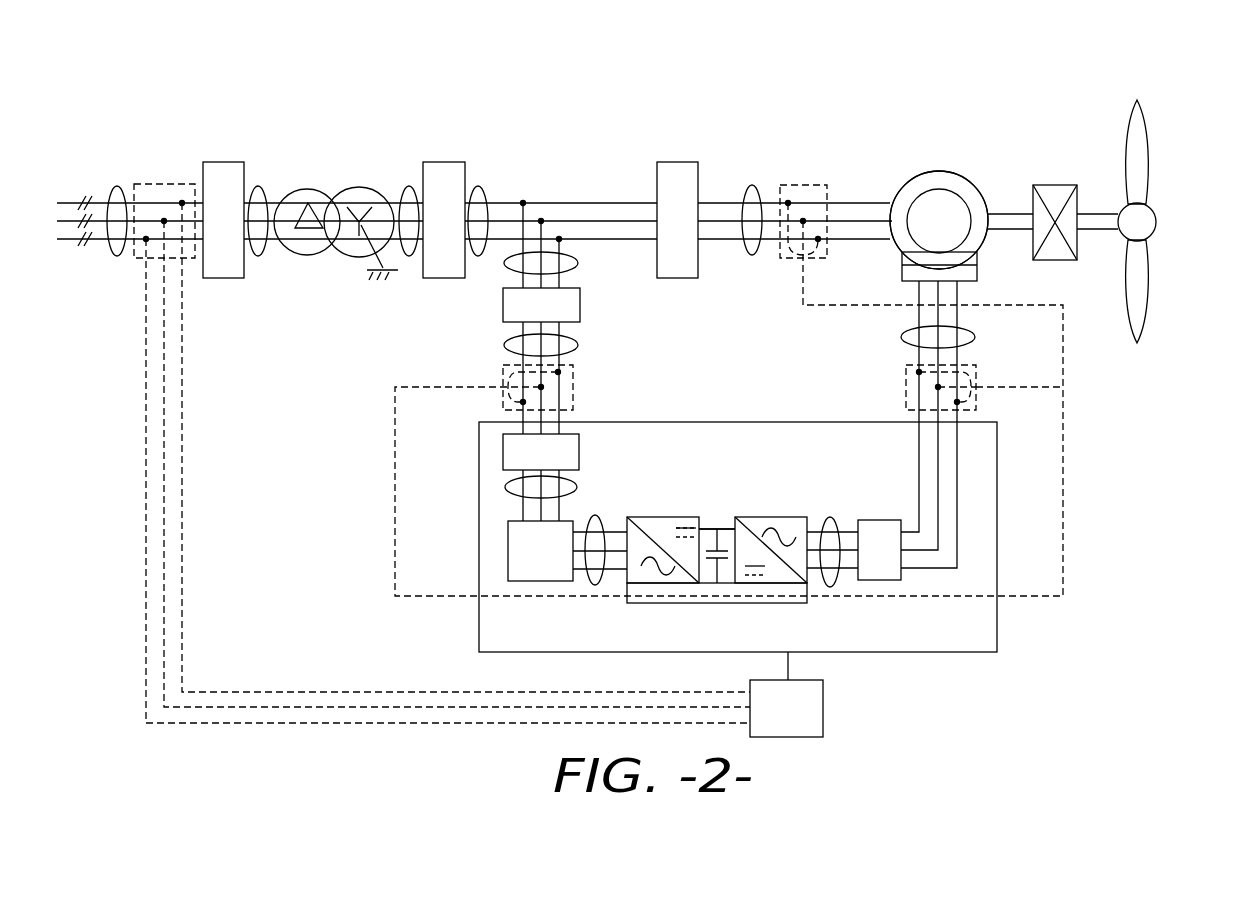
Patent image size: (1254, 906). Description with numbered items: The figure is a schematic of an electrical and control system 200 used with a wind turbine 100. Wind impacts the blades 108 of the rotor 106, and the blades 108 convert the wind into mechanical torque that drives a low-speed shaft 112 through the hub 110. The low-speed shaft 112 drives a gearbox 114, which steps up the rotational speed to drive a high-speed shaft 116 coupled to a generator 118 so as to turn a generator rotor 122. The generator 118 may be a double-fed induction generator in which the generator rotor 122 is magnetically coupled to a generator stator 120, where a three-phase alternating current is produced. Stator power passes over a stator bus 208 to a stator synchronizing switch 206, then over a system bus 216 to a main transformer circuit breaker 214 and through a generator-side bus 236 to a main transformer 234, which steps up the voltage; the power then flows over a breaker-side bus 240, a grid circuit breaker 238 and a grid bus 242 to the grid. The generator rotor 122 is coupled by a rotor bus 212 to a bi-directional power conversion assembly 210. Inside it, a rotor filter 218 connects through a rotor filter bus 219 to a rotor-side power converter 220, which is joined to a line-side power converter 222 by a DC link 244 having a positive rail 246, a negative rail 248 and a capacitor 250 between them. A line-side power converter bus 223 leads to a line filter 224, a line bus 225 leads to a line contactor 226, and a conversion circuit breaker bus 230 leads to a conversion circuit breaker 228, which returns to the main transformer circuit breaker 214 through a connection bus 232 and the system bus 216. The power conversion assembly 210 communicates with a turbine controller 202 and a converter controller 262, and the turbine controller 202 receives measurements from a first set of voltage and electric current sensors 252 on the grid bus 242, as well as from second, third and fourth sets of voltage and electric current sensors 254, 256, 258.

The wind turbine 100 is at (1108, 85).
The rotor 106 is at (1158, 182).
The blades 108 is at (1148, 148).
The hub 110 is at (1158, 225).
The low-speed shaft 112 is at (1085, 213).
The gearbox 114 is at (1055, 185).
The high-speed shaft 116 is at (1000, 213).
The generator 118 is at (918, 140).
The generator stator 120 is at (940, 172).
The generator rotor 122 is at (920, 197).
The electrical and control system 200 is at (170, 97).
The turbine controller 202 is at (765, 724).
The stator synchronizing switch 206 is at (672, 162).
The stator bus 208 is at (752, 185).
The power conversion assembly 210 is at (997, 497).
The rotor bus 212 is at (975, 337).
The main transformer circuit breaker 214 is at (445, 162).
The system bus 216 is at (478, 186).
The rotor filter 218 is at (875, 520).
The rotor filter bus 219 is at (830, 517).
The rotor-side power converter 220 is at (812, 580).
The line-side power converter 222 is at (627, 578).
The line-side power converter bus 223 is at (597, 515).
The line filter 224 is at (508, 548).
The line bus 225 is at (505, 492).
The line contactor 226 is at (503, 452).
The conversion circuit breaker 228 is at (503, 300).
The conversion circuit breaker bus 230 is at (505, 340).
The connection bus 232 is at (580, 263).
The main transformer 234 is at (355, 188).
The generator-side bus 236 is at (408, 184).
The grid circuit breaker 238 is at (220, 162).
The breaker-side bus 240 is at (258, 187).
The grid bus 242 is at (117, 187).
The DC link 244 is at (733, 511).
The positive rail 246 is at (724, 529).
The negative rail 248 is at (722, 583).
The capacitor 250 is at (715, 535).
The first set of voltage and electric current sensors 252 is at (137, 268).
The second set of voltage and electric current sensors 254 is at (822, 170).
The third set of voltage and electric current sensors 256 is at (903, 388).
The fourth set of voltage and electric current sensors 258 is at (573, 398).
The converter controller 262 is at (768, 593).